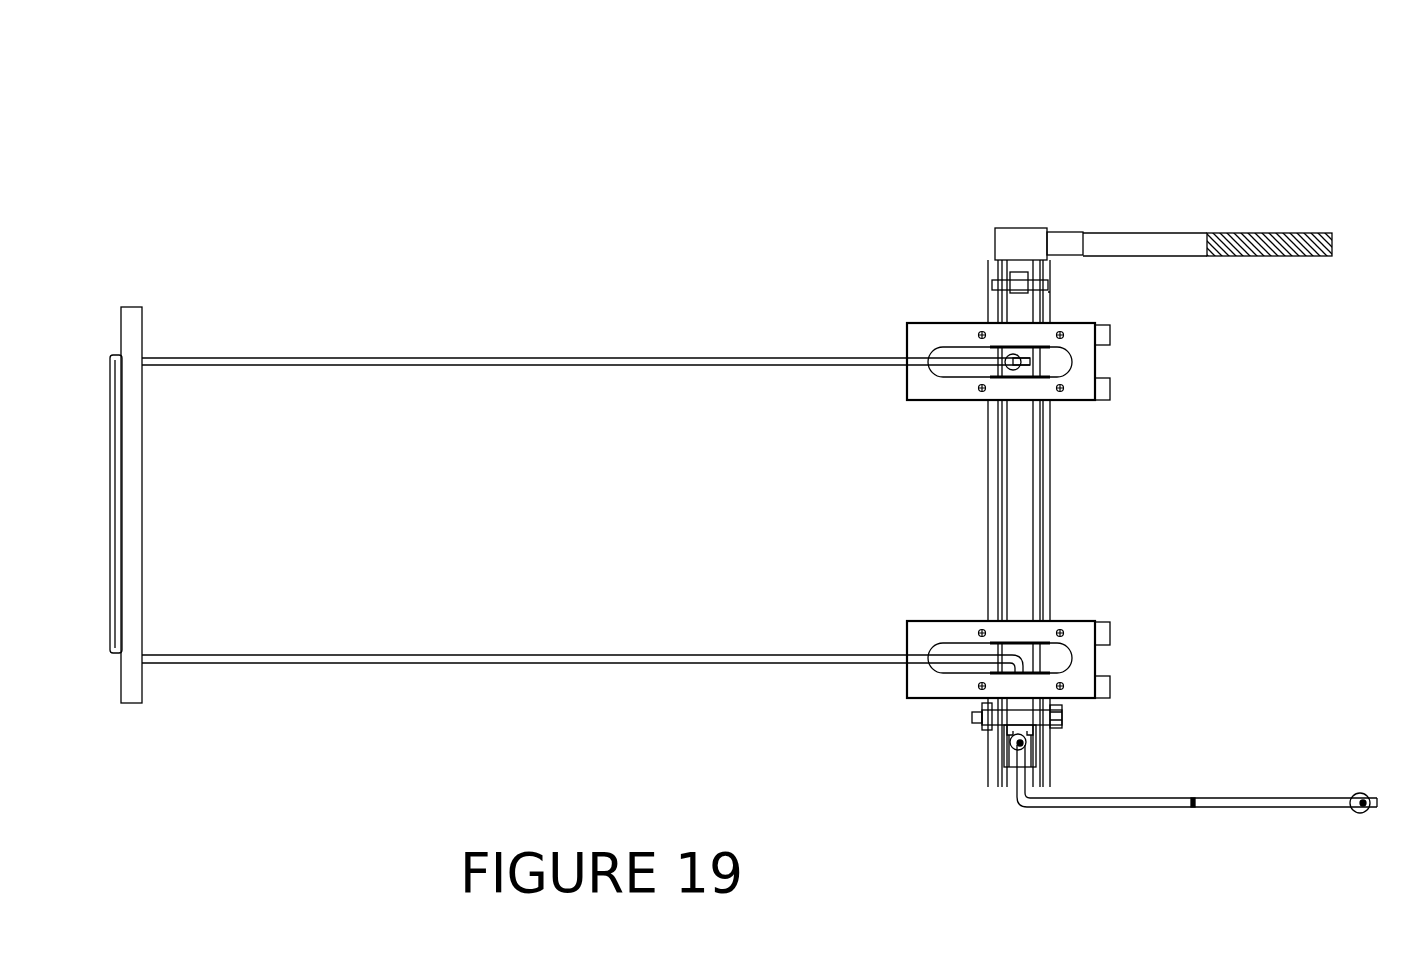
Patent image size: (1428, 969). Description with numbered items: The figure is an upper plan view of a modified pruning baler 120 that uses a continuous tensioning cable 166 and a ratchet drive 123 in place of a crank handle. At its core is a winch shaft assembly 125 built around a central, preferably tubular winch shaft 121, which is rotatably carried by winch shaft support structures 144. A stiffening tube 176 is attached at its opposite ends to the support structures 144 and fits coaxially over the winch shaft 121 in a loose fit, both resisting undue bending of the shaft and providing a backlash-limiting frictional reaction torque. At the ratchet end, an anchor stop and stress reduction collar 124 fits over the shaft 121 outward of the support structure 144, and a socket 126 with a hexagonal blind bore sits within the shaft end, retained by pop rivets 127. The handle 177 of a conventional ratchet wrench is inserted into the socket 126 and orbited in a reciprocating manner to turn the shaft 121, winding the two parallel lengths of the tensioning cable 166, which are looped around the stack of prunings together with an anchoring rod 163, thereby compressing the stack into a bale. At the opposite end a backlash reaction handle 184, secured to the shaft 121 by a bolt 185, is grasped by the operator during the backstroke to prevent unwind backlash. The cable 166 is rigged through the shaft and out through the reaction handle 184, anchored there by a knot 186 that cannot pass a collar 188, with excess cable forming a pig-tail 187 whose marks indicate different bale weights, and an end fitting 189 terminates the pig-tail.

The modified pruning baler 120 is at (750, 158).
The winch shaft 121 is at (1032, 523).
The ratchet drive 123 is at (1030, 227).
The anchor stop and stress reduction collar 124 is at (1050, 292).
The winch shaft assembly 125 is at (1062, 593).
The socket 126 is at (1040, 258).
The pop rivets 127 is at (987, 280).
The winch shaft support structure 144 is at (953, 320).
The anchoring rod 163 is at (148, 575).
The tensioning cable 166 is at (345, 355).
The stiffening tube 176 is at (1055, 520).
The ratchet drive handle 177 is at (1252, 228).
The backlash reaction handle 184 is at (985, 742).
The bolt 185 is at (1067, 717).
The knot 186 is at (1140, 777).
The pig-tail 187 is at (1030, 810).
The collar 188 is at (1003, 755).
The end fitting 189 is at (1193, 800).